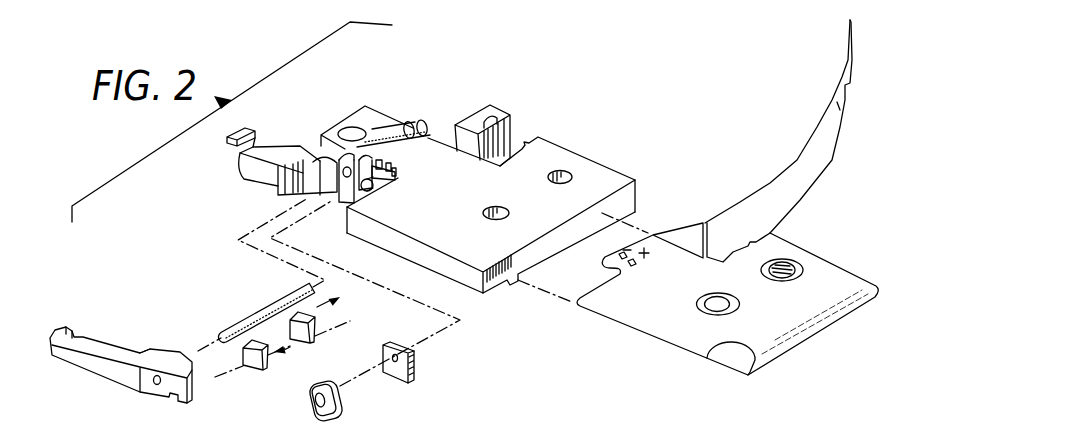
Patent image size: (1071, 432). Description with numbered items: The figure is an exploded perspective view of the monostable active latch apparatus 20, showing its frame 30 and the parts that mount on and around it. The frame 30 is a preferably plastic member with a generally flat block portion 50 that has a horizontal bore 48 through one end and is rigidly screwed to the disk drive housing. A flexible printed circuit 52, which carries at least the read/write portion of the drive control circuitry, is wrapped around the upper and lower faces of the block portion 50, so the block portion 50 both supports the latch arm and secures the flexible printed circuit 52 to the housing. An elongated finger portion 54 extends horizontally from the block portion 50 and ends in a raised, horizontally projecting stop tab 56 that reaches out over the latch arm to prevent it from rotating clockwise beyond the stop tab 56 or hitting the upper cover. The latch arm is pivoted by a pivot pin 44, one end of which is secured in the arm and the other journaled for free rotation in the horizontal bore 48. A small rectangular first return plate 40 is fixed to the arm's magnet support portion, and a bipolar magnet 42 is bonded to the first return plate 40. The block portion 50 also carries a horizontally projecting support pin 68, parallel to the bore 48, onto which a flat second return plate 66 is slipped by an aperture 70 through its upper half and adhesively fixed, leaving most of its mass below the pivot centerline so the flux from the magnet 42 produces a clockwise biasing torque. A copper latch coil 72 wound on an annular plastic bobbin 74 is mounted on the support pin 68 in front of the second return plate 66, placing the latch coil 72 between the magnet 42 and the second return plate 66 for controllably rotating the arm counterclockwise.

The latch apparatus 20 is at (530, 120).
The frame 30 is at (553, 143).
The block portion 50 is at (597, 177).
The flexible printed circuit 52 is at (797, 245).
The finger portion 54 is at (277, 150).
The stop tab 56 is at (230, 132).
The horizontal bore 48 is at (298, 190).
The support pin 68 is at (380, 186).
The pivot pin 44 is at (258, 310).
The bipolar magnet 42 is at (317, 333).
The first return plate 40 is at (263, 370).
The latch coil 72 is at (320, 383).
The bobbin 74 is at (323, 395).
The aperture 70 is at (397, 358).
The second return plate 66 is at (413, 375).